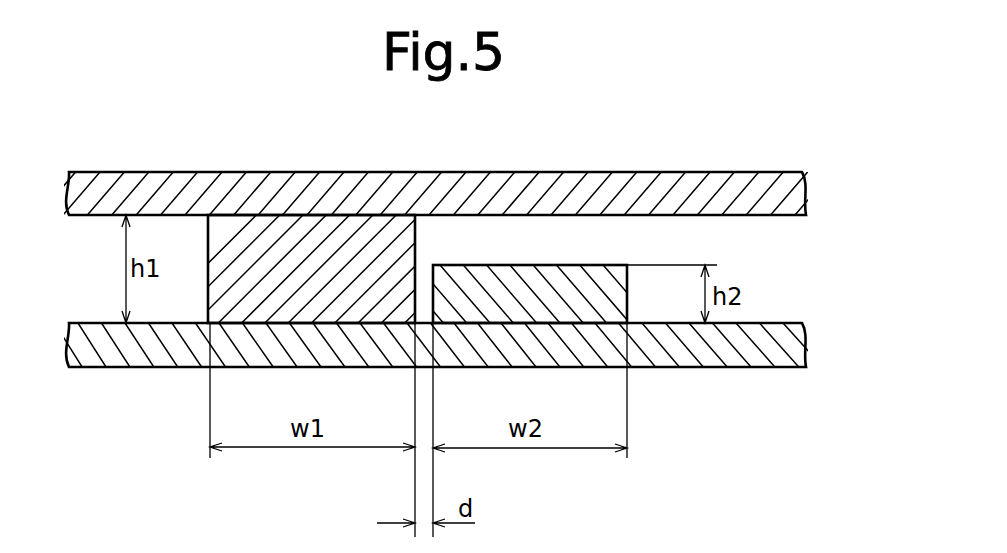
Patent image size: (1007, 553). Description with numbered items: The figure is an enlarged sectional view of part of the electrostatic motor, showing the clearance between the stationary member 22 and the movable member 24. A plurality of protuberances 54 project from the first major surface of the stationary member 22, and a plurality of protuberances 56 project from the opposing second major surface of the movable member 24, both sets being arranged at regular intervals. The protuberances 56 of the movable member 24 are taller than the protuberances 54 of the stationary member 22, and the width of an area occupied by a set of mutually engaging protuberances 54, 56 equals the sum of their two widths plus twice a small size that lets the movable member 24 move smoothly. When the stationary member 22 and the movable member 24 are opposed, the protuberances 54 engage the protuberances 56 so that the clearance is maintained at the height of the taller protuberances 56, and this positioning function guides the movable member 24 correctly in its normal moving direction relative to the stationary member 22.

The stationary member 22 is at (788, 371).
The movable member 24 is at (788, 165).
The protuberance 54 is at (535, 282).
The protuberance 56 is at (335, 242).